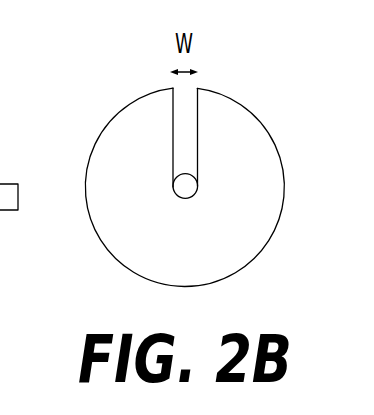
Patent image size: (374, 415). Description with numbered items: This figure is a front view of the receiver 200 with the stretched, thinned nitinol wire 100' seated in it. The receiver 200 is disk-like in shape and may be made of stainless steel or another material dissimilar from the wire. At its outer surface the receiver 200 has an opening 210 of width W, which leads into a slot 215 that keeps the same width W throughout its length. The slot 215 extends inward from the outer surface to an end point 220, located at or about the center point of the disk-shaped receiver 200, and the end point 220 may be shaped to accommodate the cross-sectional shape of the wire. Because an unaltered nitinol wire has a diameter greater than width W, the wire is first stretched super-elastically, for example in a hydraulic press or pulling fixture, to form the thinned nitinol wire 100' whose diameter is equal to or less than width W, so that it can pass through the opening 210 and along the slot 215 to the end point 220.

The receiver 200 is at (268, 90).
The opening 210 is at (186, 86).
The slot 215 is at (188, 143).
The end point 220 is at (178, 197).
The thinned nitinol wire 100' is at (268, 232).